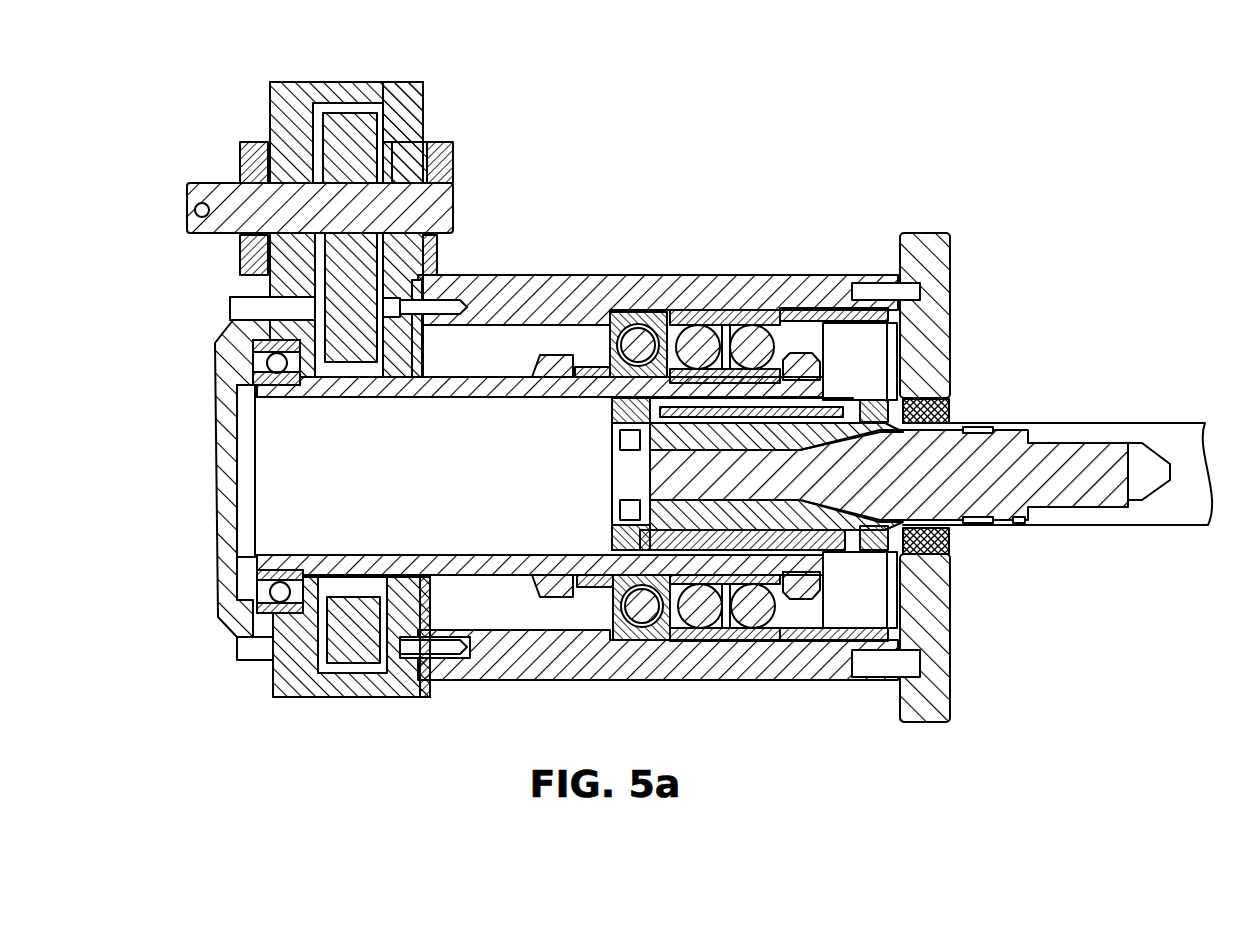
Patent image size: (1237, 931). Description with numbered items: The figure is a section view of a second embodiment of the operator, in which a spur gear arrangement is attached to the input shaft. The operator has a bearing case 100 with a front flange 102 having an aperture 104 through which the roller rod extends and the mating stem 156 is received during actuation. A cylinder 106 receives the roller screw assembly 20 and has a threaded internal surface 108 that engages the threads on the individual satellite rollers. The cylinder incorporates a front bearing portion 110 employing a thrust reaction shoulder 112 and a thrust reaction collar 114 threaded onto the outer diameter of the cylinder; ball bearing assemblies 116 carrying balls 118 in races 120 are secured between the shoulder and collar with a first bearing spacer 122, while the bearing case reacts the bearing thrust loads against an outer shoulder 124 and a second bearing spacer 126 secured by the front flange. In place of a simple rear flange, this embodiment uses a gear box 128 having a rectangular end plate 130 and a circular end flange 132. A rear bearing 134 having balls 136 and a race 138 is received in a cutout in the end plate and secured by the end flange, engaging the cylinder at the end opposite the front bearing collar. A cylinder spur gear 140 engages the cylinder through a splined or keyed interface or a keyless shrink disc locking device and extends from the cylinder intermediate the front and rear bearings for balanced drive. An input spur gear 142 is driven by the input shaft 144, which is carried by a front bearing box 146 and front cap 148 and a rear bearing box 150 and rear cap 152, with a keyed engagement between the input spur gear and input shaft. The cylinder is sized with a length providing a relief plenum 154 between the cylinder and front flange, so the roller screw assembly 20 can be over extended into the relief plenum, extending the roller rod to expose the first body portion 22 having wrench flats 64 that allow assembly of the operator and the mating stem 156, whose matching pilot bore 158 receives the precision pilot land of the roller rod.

The roller screw assembly 20 is at (841, 555).
The first body portion 22 is at (1005, 428).
The wrench flats 64 is at (980, 525).
The bearing case 100 is at (580, 290).
The front flange 102 is at (935, 240).
The aperture 104 is at (950, 395).
The cylinder 106 is at (470, 385).
The threaded internal surface 108 is at (415, 400).
The front bearing portion 110 is at (600, 554).
The thrust reaction shoulder 112 is at (553, 360).
The thrust reaction collar 114 is at (806, 356).
The ball bearing assemblies 116 is at (738, 310).
The balls 118 is at (640, 345).
The races 120 is at (690, 318).
The first bearing spacer 122 is at (594, 583).
The outer shoulder 124 is at (618, 640).
The second bearing spacer 126 is at (833, 641).
The gear box 128 is at (405, 85).
The rectangular end plate 130 is at (282, 98).
The circular end flange 132 is at (228, 345).
The rear bearing 134 is at (250, 380).
The balls 136 is at (276, 593).
The race 138 is at (252, 578).
The cylinder spur gear 140 is at (352, 657).
The input spur gear 142 is at (354, 118).
The input shaft 144 is at (190, 216).
The front bearing box 146 is at (418, 160).
The front cap 148 is at (455, 154).
The rear bearing box 150 is at (262, 166).
The rear cap 152 is at (248, 262).
The relief plenum 154 is at (838, 398).
The mating stem 156 is at (1130, 424).
The pilot bore 158 is at (1022, 525).